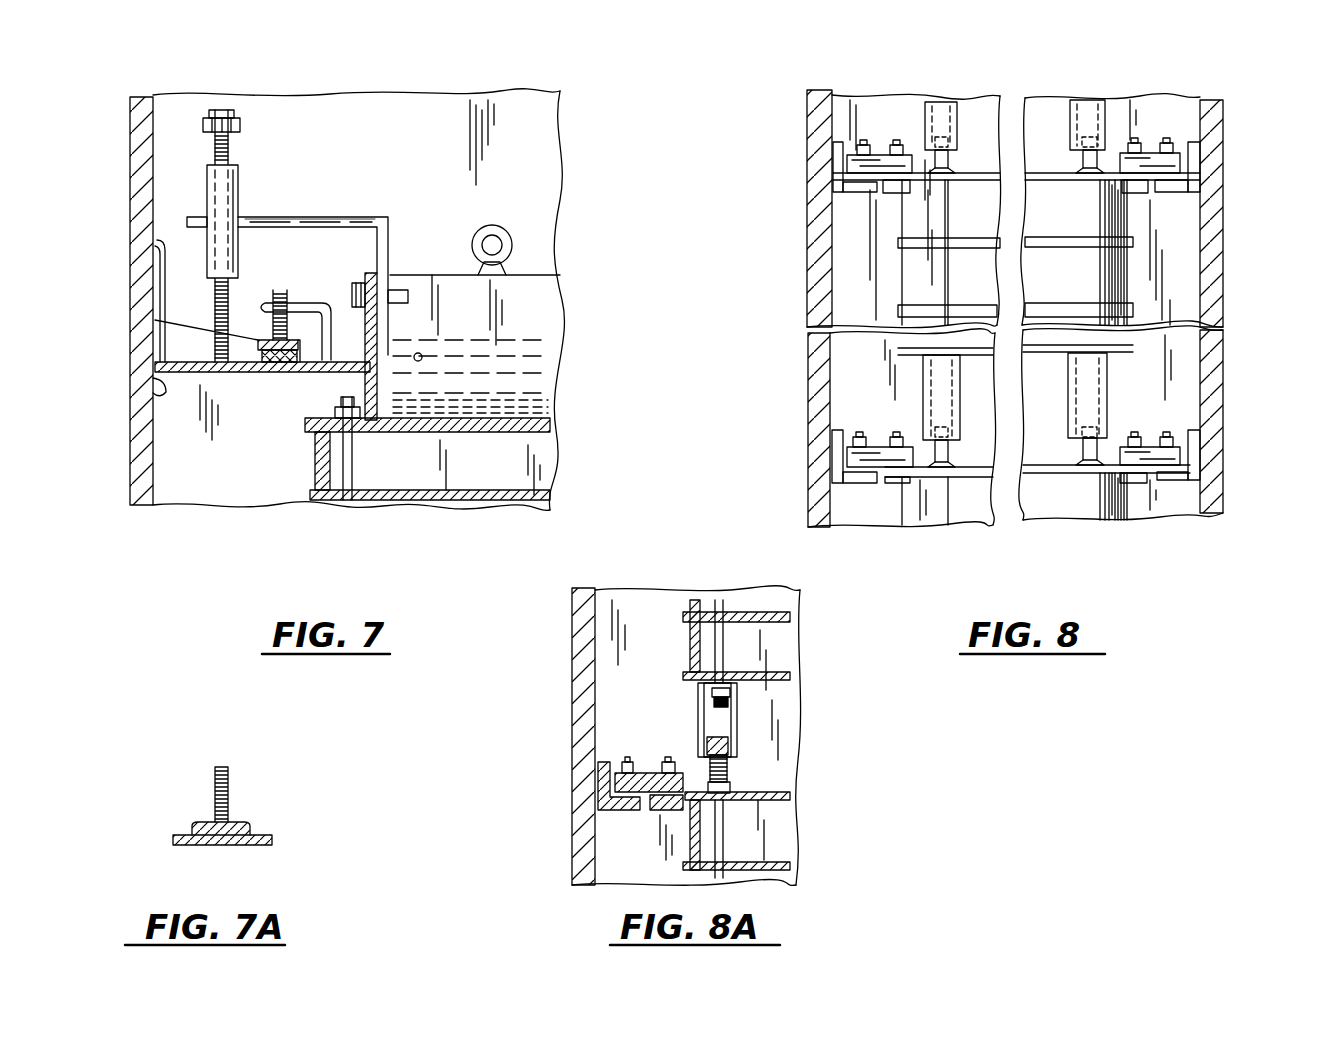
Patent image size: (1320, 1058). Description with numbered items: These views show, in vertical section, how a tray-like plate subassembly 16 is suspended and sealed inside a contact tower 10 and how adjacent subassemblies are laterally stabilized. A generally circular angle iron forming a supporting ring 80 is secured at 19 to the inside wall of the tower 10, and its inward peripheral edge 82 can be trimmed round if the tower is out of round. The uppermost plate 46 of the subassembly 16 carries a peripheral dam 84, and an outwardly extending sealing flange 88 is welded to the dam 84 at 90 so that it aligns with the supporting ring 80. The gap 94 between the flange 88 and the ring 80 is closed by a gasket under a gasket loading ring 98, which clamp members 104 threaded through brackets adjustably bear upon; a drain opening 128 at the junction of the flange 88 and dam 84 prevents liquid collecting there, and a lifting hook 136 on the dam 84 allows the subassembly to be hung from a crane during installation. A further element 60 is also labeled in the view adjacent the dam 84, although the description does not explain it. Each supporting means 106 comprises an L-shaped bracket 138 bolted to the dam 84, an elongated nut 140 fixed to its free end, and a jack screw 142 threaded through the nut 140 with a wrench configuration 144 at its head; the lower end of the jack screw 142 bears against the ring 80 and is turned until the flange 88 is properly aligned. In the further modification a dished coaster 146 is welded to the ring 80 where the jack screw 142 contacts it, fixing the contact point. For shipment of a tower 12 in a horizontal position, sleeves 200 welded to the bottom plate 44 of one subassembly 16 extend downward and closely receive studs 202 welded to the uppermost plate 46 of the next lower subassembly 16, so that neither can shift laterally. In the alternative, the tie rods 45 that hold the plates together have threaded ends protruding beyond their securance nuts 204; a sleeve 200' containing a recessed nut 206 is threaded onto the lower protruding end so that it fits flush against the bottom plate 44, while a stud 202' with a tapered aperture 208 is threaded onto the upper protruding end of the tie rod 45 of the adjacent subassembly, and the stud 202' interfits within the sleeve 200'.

In FIG. 7, the tower 10 is at (132, 483).
In FIG. 8, the contact tower 12 is at (1200, 381).
In FIG. 7, the plate subassembly 16 is at (395, 458).
In FIG. 8, the plate subassembly 16 is at (1113, 271).
In FIG. 7, the securement location 19 is at (158, 243).
In FIG. 8, the bottom plate 44 is at (903, 353).
In FIG. 8A, the bottom plate 44 is at (780, 671).
In FIG. 8A, the tie rods 45 is at (725, 638).
In FIG. 8, the uppermost plate 46 is at (930, 476).
In FIG. 7, the tank wall 60 is at (522, 395).
In FIG. 7, the supporting ring 80 is at (153, 325).
In FIG. 7A, the supporting ring 80 is at (185, 847).
In FIG. 7, the inward peripheral edge 82 is at (262, 375).
In FIG. 7, the peripheral dam 84 is at (395, 384).
In FIG. 7, the sealing flange 88 is at (295, 375).
In FIG. 7, the weld 90 is at (363, 373).
In FIG. 7, the peripheral gap 94 is at (278, 375).
In FIG. 7, the gasket loading ring 98 is at (153, 366).
In FIG. 7, the clamp member 104 is at (273, 291).
In FIG. 7, the supporting means 106 is at (306, 213).
In FIG. 7, the drain opening 128 is at (388, 360).
In FIG. 7, the lifting hook 136 is at (512, 234).
In FIG. 7, the L-shaped bracket 138 is at (362, 216).
In FIG. 7, the elongated nut 140 is at (240, 192).
In FIG. 7, the jack screw 142 is at (213, 149).
In FIG. 7A, the jack screw 142 is at (215, 776).
In FIG. 7, the wrench configuration 144 is at (239, 117).
In FIG. 7A, the coaster 146 is at (192, 829).
In FIG. 8, the sleeve 200 is at (1009, 270).
In FIG. 8A, the sleeve 200' is at (790, 720).
In FIG. 8, the stud 202 is at (1016, 315).
In FIG. 8A, the stud 202' is at (796, 774).
In FIG. 8A, the securance nut 204 is at (712, 690).
In FIG. 8A, the recessed nut 206 is at (707, 695).
In FIG. 8A, the tapered aperture 208 is at (732, 747).